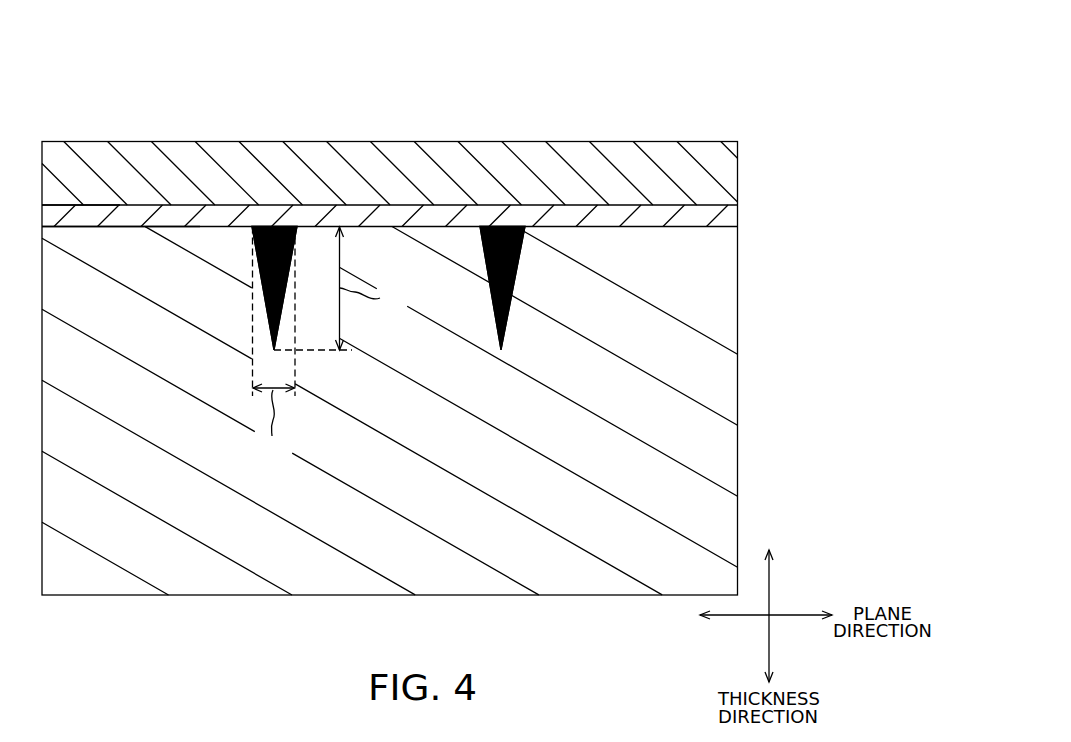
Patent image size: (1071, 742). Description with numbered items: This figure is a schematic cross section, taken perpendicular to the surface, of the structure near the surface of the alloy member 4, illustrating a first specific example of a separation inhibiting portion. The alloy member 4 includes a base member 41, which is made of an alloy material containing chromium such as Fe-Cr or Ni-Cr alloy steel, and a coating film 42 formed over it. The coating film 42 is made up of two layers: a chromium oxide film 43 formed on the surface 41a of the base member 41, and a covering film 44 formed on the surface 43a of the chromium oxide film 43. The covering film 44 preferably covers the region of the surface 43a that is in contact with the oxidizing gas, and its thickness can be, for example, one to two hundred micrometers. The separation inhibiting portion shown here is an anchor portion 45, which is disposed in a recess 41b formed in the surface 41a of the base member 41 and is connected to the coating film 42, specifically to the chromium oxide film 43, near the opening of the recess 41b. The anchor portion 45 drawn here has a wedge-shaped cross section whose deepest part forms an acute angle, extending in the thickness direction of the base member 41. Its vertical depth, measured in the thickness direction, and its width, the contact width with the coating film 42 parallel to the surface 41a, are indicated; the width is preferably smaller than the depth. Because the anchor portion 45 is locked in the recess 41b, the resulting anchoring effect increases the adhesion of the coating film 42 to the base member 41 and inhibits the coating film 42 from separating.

The alloy member 4 is at (725, 117).
The base member 41 is at (735, 406).
The surface of the base member 41a is at (124, 226).
The recess 41b is at (252, 269).
The coating film 42 is at (479, 135).
The chromium oxide film 43 is at (731, 218).
The surface of the chromium oxide film 43a is at (66, 202).
The covering film 44 is at (733, 163).
The anchor portion 45 is at (294, 257).